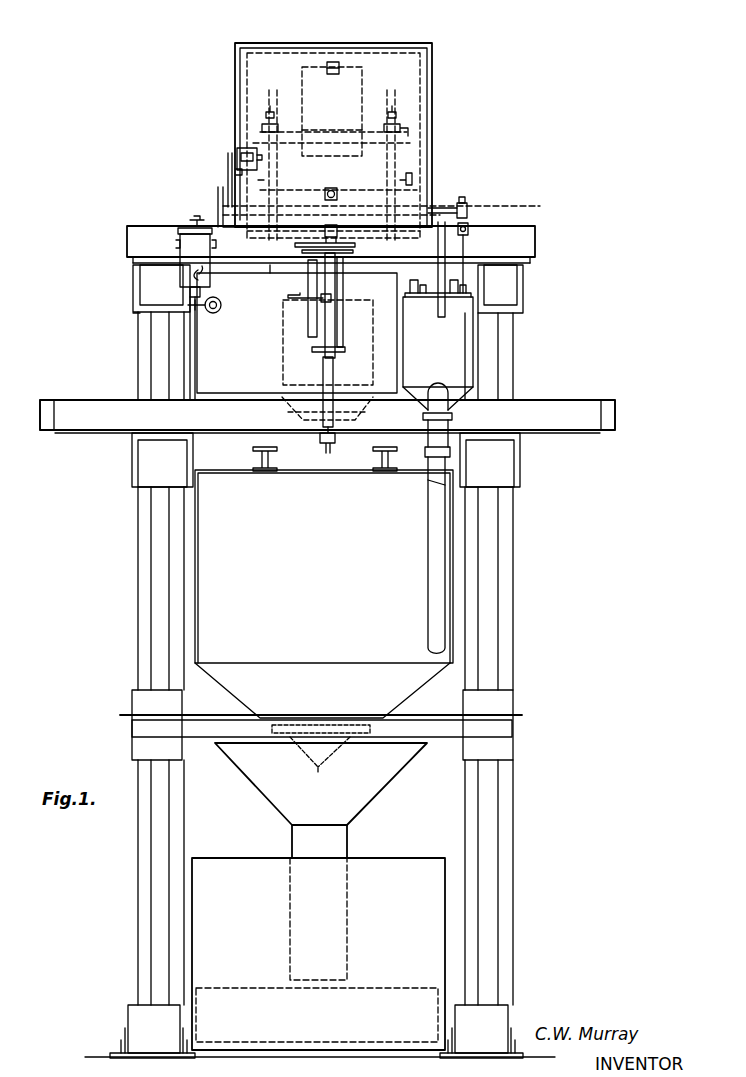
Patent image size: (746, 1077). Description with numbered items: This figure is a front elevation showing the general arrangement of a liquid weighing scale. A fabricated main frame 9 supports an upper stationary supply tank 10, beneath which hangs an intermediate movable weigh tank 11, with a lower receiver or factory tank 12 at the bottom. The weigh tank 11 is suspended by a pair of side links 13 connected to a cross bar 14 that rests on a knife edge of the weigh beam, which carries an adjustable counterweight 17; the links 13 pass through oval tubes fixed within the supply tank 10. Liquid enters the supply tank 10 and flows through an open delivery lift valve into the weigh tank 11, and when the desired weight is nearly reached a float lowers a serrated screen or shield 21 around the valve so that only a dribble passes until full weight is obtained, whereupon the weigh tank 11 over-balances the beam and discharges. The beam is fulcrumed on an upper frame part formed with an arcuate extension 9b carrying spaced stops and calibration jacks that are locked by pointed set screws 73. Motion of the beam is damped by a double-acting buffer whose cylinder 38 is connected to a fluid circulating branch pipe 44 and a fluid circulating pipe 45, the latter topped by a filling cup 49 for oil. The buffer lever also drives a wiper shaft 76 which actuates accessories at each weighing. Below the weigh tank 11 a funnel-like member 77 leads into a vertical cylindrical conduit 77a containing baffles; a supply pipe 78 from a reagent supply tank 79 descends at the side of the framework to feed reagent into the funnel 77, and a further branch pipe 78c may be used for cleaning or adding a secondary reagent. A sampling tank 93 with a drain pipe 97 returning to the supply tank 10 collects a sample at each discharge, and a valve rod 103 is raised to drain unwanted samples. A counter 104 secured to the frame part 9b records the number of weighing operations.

The frame 9 is at (105, 418).
The arcuate extension 9b is at (283, 68).
The supply tank 10 is at (228, 361).
The weigh tank 11 is at (327, 599).
The receiver or factory tank 12 is at (259, 937).
The side links 13 is at (397, 160).
The cross bar 14 is at (327, 133).
The adjustable counterweight 17 is at (355, 92).
The screen or shield 21 is at (270, 364).
The cylinder 38 is at (341, 290).
The fluid circulating branch pipe 44 is at (303, 298).
The fluid circulating pipe 45 is at (327, 310).
The filling cup 49 is at (334, 225).
The set screws 73 is at (328, 190).
The wiper shaft 76 is at (440, 206).
The funnel-like member 77 is at (331, 798).
The vertical cylindrical conduit 77a is at (297, 838).
The supply pipe 78 is at (428, 580).
The further branch pipe 78c is at (432, 482).
The reagent supply tank 79 is at (447, 361).
The sampling tank 93 is at (187, 272).
The drain pipe 97 is at (216, 304).
The valve rod 103 is at (197, 218).
The counter 104 is at (228, 160).